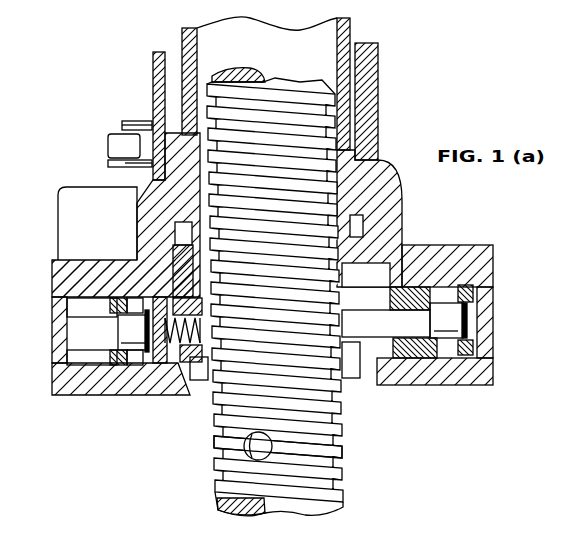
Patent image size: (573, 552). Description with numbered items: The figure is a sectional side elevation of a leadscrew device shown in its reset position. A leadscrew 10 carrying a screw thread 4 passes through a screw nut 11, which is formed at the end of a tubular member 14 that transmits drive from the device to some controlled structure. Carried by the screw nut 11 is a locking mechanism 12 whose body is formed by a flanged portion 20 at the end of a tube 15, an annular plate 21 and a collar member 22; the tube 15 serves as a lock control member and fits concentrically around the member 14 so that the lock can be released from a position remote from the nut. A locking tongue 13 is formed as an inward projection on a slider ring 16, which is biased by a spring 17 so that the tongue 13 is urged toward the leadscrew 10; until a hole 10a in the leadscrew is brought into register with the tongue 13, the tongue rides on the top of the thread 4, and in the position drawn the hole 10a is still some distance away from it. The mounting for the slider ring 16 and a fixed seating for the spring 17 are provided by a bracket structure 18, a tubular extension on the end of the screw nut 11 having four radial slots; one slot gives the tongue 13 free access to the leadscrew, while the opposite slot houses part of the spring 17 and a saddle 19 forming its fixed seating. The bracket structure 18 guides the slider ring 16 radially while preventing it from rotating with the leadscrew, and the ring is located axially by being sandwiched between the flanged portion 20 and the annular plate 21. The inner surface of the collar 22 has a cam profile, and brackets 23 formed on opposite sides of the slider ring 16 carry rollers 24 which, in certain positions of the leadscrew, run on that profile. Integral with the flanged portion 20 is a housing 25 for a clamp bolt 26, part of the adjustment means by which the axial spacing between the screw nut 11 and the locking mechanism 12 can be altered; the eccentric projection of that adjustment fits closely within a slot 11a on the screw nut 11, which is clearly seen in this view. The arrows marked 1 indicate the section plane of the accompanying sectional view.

The section line 1 is at (28, 310).
The leadscrew thread 4 is at (343, 451).
The leadscrew 10 is at (297, 78).
The hole 10a is at (244, 450).
The screw nut 11 is at (362, 172).
The slot 11a is at (368, 222).
The locking mechanism 12 is at (476, 240).
The tongue 13 is at (370, 320).
The tubular member 14 is at (345, 25).
The tube 15 is at (378, 98).
The slider ring 16 is at (418, 360).
The spring 17 is at (160, 365).
The bracket structure 18 is at (352, 378).
The saddle 19 is at (198, 347).
The flanged portion 20 is at (55, 268).
The annular plate 21 is at (55, 388).
The collar member 22 is at (62, 345).
The brackets 23 is at (118, 298).
The rollers 24 is at (292, 327).
The housing 25 is at (58, 200).
The clamp bolt 26 is at (134, 124).